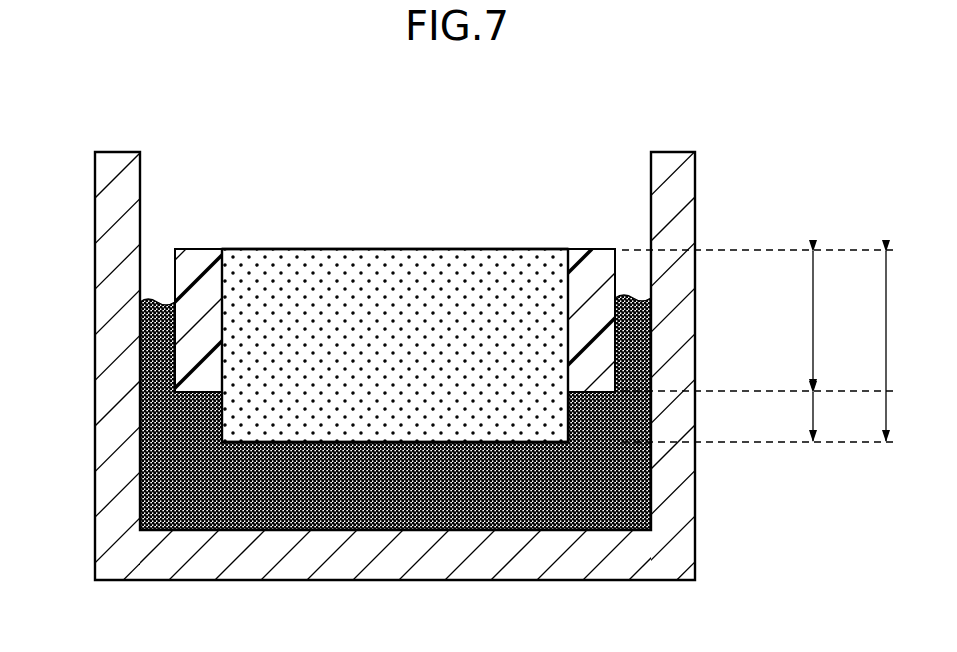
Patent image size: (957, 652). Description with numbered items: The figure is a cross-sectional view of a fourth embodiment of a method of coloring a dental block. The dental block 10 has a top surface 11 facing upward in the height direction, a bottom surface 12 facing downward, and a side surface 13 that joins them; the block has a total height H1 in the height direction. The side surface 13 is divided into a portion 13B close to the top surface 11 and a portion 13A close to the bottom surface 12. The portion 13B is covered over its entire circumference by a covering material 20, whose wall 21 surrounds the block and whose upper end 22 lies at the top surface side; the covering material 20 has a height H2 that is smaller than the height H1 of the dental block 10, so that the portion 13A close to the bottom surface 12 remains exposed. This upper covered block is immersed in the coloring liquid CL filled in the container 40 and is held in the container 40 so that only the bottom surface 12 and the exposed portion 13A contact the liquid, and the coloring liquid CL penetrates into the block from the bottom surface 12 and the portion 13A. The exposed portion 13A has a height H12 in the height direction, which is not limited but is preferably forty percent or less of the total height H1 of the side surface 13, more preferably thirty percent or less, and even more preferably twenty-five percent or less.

The dental block 10 is at (412, 258).
The top surface 11 is at (332, 249).
The bottom surface 12 is at (395, 442).
The side surface 13 is at (187, 270).
The portion close to the bottom surface 13A is at (222, 421).
The portion close to the top surface 13B is at (222, 335).
The covering material 20 is at (577, 322).
The wall 21 is at (203, 268).
The upper end 22 is at (607, 249).
The container 40 is at (677, 197).
The coloring liquid CL is at (590, 504).
The height H1 is at (906, 346).
The height H2 is at (834, 320).
The height H12 is at (841, 416).